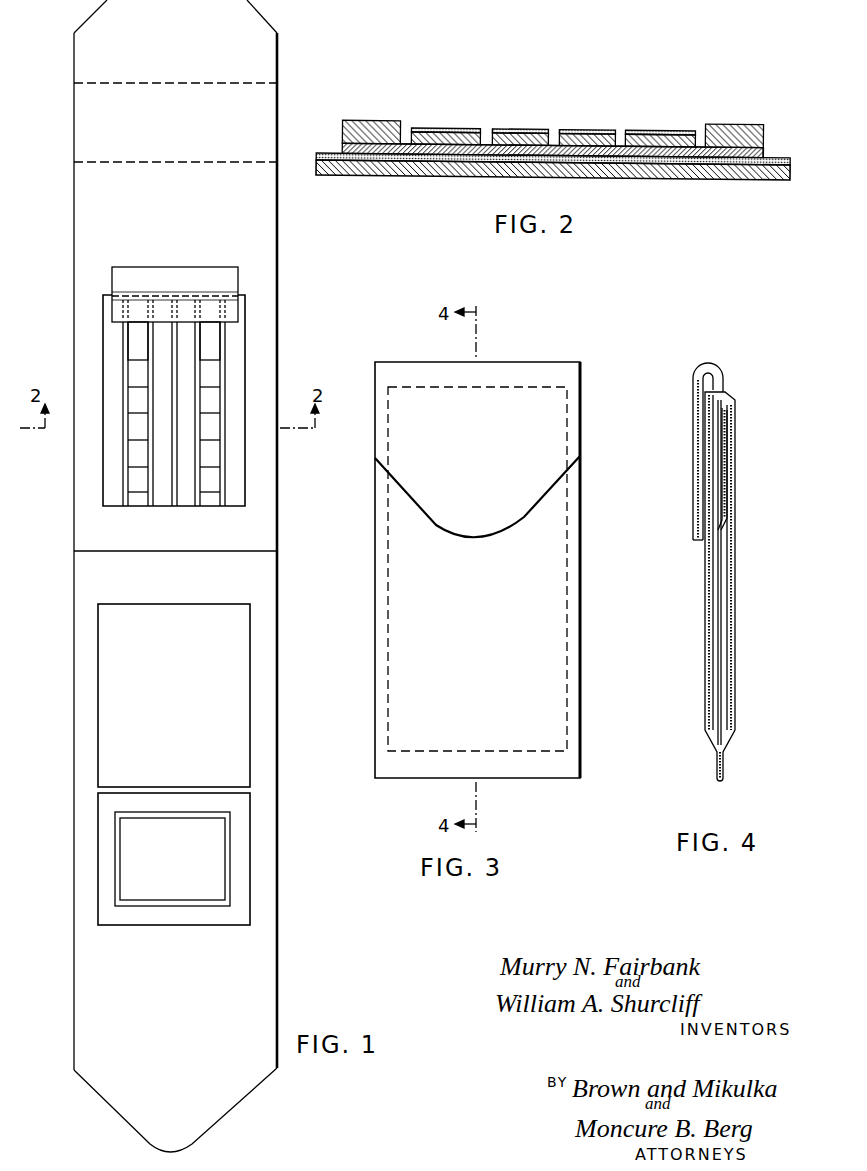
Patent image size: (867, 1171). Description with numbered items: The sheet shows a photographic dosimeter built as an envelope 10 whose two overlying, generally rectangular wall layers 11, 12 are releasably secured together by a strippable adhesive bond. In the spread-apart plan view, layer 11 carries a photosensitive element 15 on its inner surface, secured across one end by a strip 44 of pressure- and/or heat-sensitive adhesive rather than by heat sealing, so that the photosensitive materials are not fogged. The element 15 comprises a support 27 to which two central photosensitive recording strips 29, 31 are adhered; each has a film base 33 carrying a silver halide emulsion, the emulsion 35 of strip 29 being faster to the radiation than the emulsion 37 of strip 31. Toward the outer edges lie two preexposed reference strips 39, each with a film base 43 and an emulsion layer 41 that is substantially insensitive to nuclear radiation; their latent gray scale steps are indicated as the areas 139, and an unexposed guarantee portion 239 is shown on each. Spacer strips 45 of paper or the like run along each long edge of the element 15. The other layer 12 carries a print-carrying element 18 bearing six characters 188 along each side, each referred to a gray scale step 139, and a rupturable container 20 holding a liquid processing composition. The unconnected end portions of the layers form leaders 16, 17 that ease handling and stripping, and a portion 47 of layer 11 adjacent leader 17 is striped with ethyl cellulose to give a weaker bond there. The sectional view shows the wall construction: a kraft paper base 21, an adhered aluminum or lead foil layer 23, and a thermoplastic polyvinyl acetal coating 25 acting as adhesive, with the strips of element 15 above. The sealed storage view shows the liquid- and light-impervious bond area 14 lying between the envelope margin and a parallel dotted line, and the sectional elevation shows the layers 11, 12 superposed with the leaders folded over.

In FIG. 3, the envelope 10 is at (580, 638).
In FIG. 1, the layer 11 is at (268, 233).
In FIG. 4, the layer 11 is at (712, 629).
In FIG. 1, the layer 12 is at (262, 603).
In FIG. 4, the layer 12 is at (737, 628).
In FIG. 3, the seal 14 is at (575, 526).
In FIG. 1, the photosensitive element 15 is at (166, 372).
In FIG. 1, the leader 16 is at (250, 1083).
In FIG. 1, the leader 17 is at (262, 26).
In FIG. 1, the print-carrying element 18 is at (168, 695).
In FIG. 4, the print-carrying element 18 is at (735, 583).
In FIG. 1, the rupturable container 20 is at (252, 846).
In FIG. 4, the rupturable container 20 is at (727, 452).
In FIG. 2, the base 21 is at (660, 175).
In FIG. 2, the foil layer 23 is at (318, 158).
In FIG. 2, the thermoplastic coating 25 is at (342, 150).
In FIG. 2, the support 27 is at (762, 150).
In FIG. 2, the photosensitive recording strip 29 is at (518, 124).
In FIG. 2, the photosensitive recording strip 31 is at (576, 124).
In FIG. 2, the film base 33 is at (485, 134).
In FIG. 2, the emulsion 35 is at (521, 130).
In FIG. 2, the emulsion 37 is at (589, 130).
In FIG. 2, the photosensitive reference strip 39 is at (420, 124).
In FIG. 2, the silver halide emulsion layer 41 is at (440, 128).
In FIG. 2, the film base 43 is at (410, 134).
In FIG. 1, the adhesive strip 44 is at (174, 275).
In FIG. 2, the spacer strip 45 is at (359, 126).
In FIG. 1, the striped portion 47 is at (214, 86).
In FIG. 1, the gray scale step area 139 is at (136, 373).
In FIG. 1, the characters 188 is at (105, 620).
In FIG. 1, the guarantee portion 239 is at (136, 342).